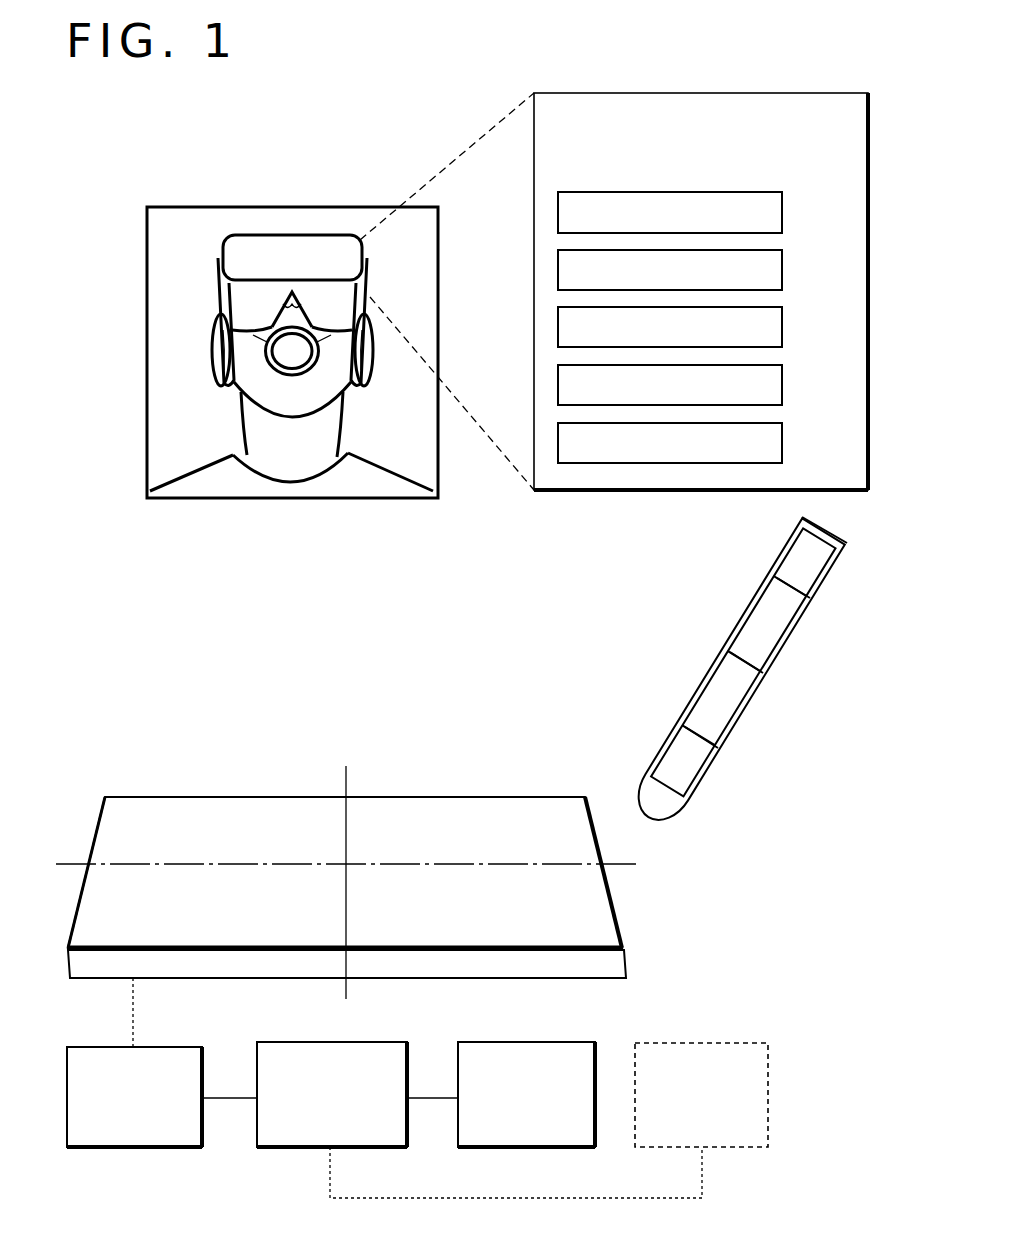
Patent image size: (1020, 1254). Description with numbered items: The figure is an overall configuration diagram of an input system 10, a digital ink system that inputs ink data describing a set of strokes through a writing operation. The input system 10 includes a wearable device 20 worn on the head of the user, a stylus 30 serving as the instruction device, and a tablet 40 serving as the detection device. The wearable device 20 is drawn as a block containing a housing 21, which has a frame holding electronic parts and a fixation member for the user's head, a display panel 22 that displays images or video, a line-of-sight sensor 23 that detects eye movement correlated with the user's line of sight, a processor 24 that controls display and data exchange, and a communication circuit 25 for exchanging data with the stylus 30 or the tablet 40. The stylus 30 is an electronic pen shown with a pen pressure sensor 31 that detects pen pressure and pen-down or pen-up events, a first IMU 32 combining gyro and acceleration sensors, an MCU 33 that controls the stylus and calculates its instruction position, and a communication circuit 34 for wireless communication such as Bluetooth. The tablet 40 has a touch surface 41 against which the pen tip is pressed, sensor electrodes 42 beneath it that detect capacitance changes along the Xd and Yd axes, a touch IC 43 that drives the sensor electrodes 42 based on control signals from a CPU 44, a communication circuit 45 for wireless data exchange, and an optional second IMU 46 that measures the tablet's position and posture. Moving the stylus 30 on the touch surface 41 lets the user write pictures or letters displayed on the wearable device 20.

The input system 10 is at (121, 115).
The wearable device 20 is at (802, 92).
The housing 21 is at (784, 209).
The display panel 22 is at (784, 267).
The line-of-sight sensor 23 is at (784, 324).
The processor 24 is at (784, 382).
The communication circuit 25 is at (784, 440).
The stylus 30 is at (685, 626).
The pen pressure sensor 31 is at (707, 753).
The first IMU 32 is at (750, 678).
The MCU 33 is at (790, 598).
The communication circuit 34 is at (830, 547).
The tablet 40 is at (56, 744).
The touch surface 41 is at (139, 820).
The sensor electrodes 42 is at (615, 966).
The touch IC 43 is at (100, 1045).
The CPU 44 is at (302, 1040).
The communication circuit 45 is at (502, 1040).
The second IMU 46 is at (668, 1042).